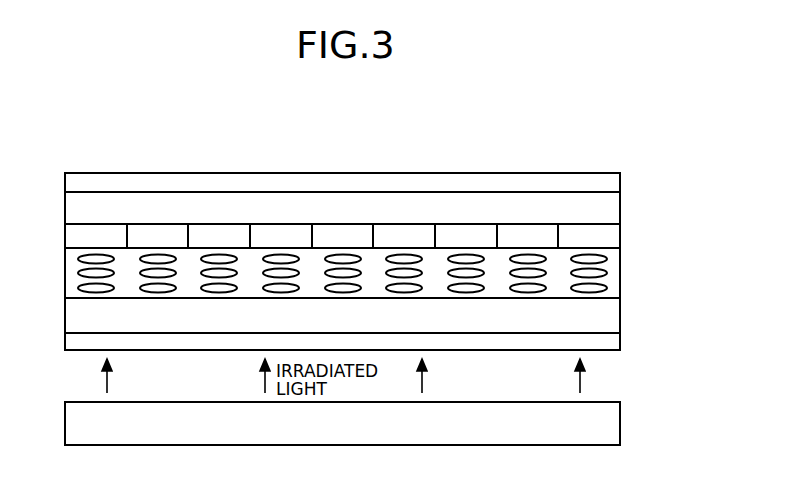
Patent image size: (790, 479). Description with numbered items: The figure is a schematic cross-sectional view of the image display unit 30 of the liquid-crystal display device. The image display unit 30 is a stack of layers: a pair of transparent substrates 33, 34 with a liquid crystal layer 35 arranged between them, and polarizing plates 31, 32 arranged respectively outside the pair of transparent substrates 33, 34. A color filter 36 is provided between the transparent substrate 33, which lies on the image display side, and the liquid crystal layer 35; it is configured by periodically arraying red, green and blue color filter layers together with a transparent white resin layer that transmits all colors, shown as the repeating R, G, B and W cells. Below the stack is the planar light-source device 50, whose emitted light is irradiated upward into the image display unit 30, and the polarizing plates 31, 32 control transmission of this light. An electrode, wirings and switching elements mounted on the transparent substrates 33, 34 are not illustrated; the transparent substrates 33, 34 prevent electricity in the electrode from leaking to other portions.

The image display unit 30 is at (590, 127).
The polarizing plate 31 is at (621, 178).
The transparent substrate 33 is at (621, 208).
The color filter 36 is at (638, 238).
The liquid crystal layer 35 is at (638, 273).
The transparent substrate 34 is at (621, 313).
The polarizing plate 32 is at (621, 339).
The planar light-source device 50 is at (621, 418).